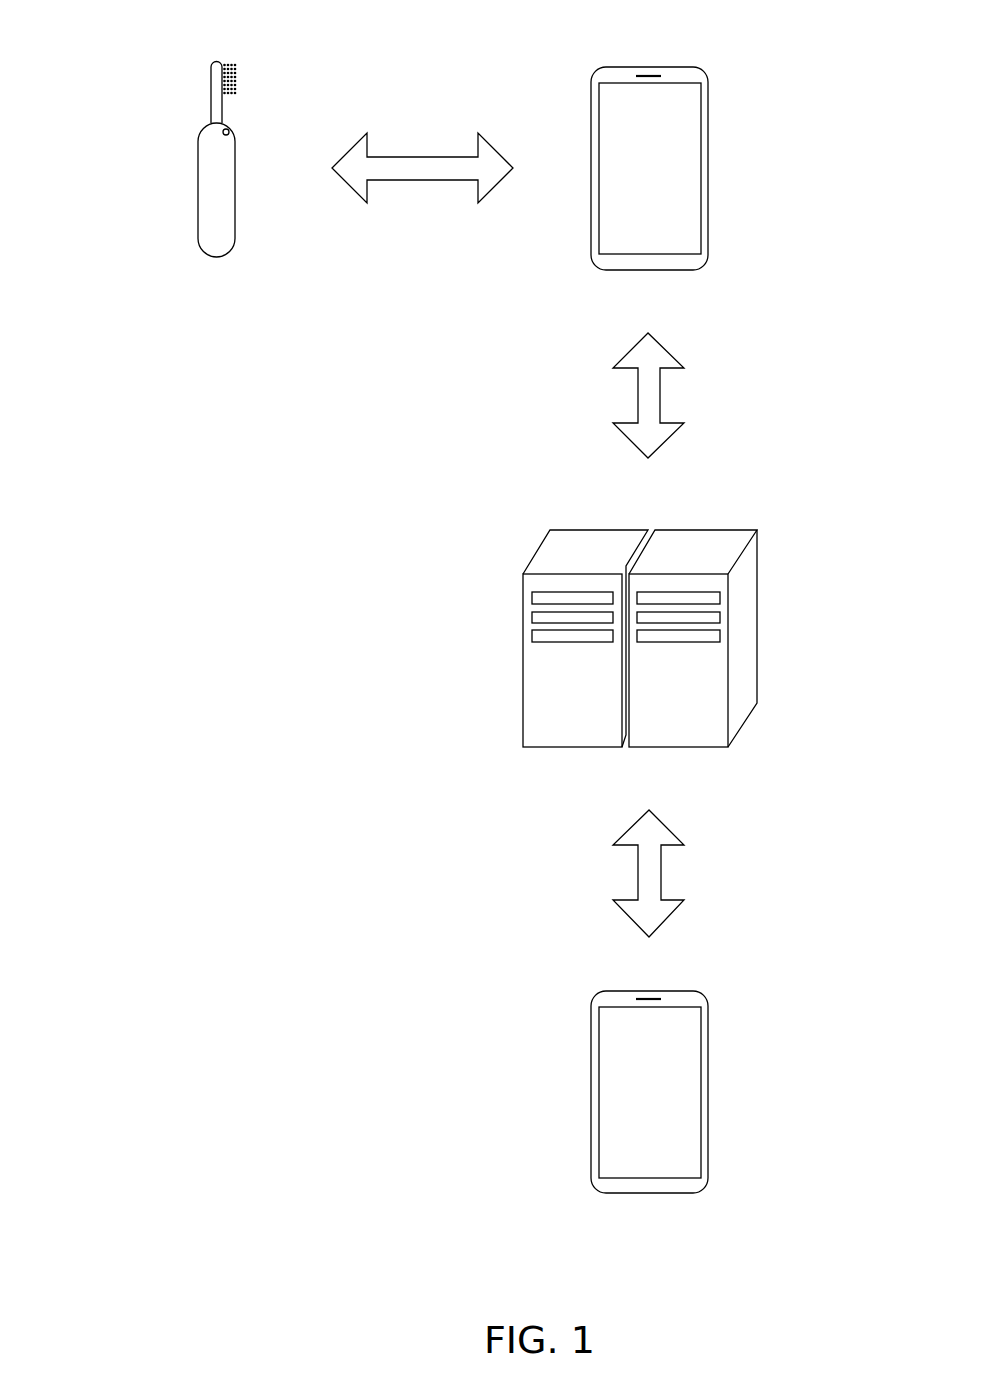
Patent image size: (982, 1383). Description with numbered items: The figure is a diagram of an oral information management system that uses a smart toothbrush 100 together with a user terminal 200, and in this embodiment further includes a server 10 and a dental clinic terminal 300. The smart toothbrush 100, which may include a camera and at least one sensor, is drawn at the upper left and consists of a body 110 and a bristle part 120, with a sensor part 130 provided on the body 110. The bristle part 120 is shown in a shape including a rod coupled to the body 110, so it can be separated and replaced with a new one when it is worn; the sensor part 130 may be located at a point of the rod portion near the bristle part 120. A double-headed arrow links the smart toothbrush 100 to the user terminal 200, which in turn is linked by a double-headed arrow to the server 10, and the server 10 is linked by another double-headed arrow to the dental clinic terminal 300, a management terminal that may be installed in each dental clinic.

The smart toothbrush 100 is at (189, 133).
The body 110 is at (198, 195).
The bristle part 120 is at (211, 95).
The sensor part 130 is at (229, 131).
The user terminal 200 is at (708, 168).
The server 10 is at (728, 657).
The dental clinic terminal 300 is at (708, 1092).